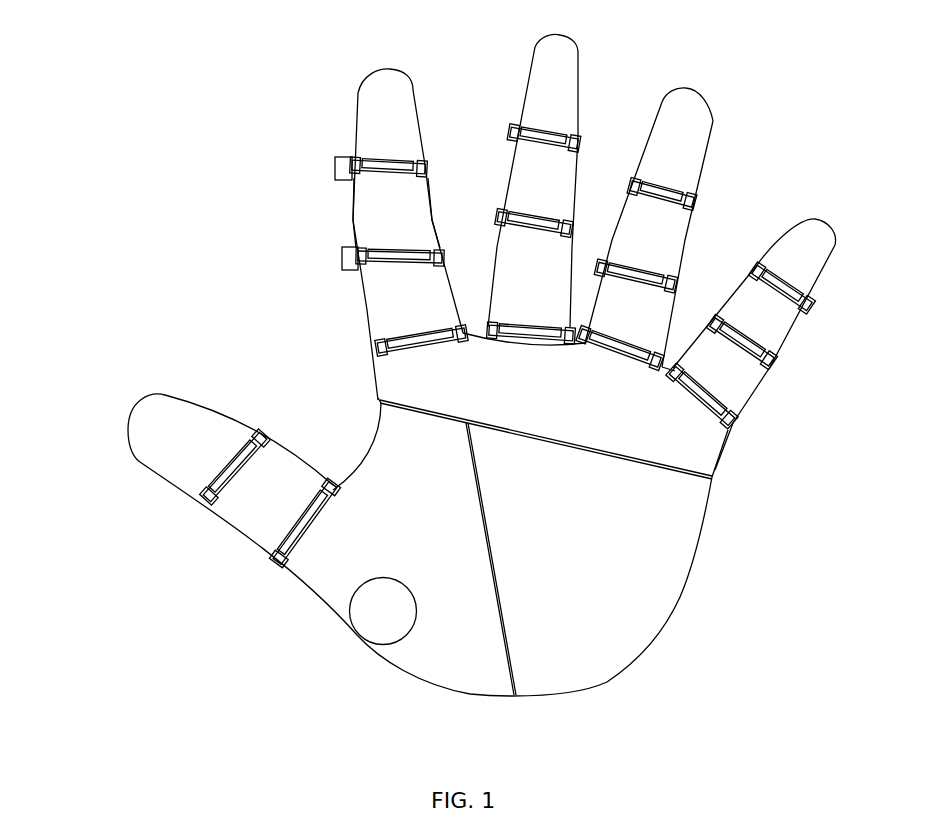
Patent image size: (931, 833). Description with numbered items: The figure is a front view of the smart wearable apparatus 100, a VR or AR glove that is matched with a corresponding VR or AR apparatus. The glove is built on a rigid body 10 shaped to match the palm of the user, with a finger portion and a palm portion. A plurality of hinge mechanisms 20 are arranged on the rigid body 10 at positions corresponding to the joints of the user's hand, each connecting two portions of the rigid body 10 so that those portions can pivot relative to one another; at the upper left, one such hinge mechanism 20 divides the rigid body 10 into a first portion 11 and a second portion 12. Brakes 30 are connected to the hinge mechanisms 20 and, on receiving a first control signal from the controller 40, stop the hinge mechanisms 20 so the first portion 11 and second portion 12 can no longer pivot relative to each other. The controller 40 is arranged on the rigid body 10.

The smart wearable apparatus 100 is at (172, 342).
The rigid body 10 is at (397, 427).
The first portion 11 is at (365, 125).
The second portion 12 is at (373, 222).
The hinge mechanism 20 is at (417, 168).
The brake 30 is at (348, 165).
The controller 40 is at (363, 615).